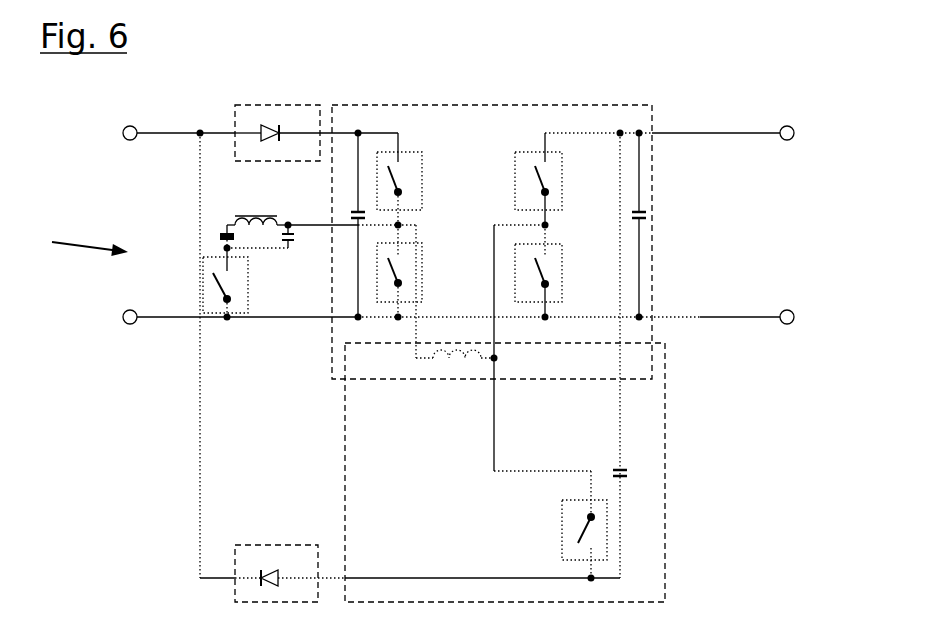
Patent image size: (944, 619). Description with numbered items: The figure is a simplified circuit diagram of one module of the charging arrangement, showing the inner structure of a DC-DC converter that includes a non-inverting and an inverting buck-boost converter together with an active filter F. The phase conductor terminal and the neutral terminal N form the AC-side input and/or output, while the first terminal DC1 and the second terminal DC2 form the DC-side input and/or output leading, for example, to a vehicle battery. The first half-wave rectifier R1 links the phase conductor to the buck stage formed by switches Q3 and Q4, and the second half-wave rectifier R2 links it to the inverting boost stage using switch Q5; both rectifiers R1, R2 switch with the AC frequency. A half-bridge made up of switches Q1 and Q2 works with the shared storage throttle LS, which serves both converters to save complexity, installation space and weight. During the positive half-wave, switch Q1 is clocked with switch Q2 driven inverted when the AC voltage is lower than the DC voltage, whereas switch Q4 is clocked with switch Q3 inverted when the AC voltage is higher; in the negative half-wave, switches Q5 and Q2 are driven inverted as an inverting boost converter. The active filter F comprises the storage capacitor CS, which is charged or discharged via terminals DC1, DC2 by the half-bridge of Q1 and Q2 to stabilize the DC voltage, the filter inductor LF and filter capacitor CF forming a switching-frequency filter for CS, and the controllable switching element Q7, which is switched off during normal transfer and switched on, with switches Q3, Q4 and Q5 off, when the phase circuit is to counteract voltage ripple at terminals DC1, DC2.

The first half-wave rectifier R1 is at (277, 111).
The second half-wave rectifier R2 is at (290, 559).
The switch Q1 is at (560, 271).
The switch Q2 is at (560, 188).
The switch Q3 is at (417, 271).
The switch Q4 is at (417, 188).
The switch Q5 is at (570, 539).
The controllable switching element Q7 is at (250, 284).
The filter inductor LF is at (259, 210).
The filter capacitor CF is at (301, 248).
The storage capacitor CS is at (245, 247).
The storage throttle LS is at (457, 382).
The neutral conductor terminal N is at (213, 317).
The first DC terminal DC1 is at (784, 135).
The second DC terminal DC2 is at (637, 319).
The active filter F is at (76, 242).